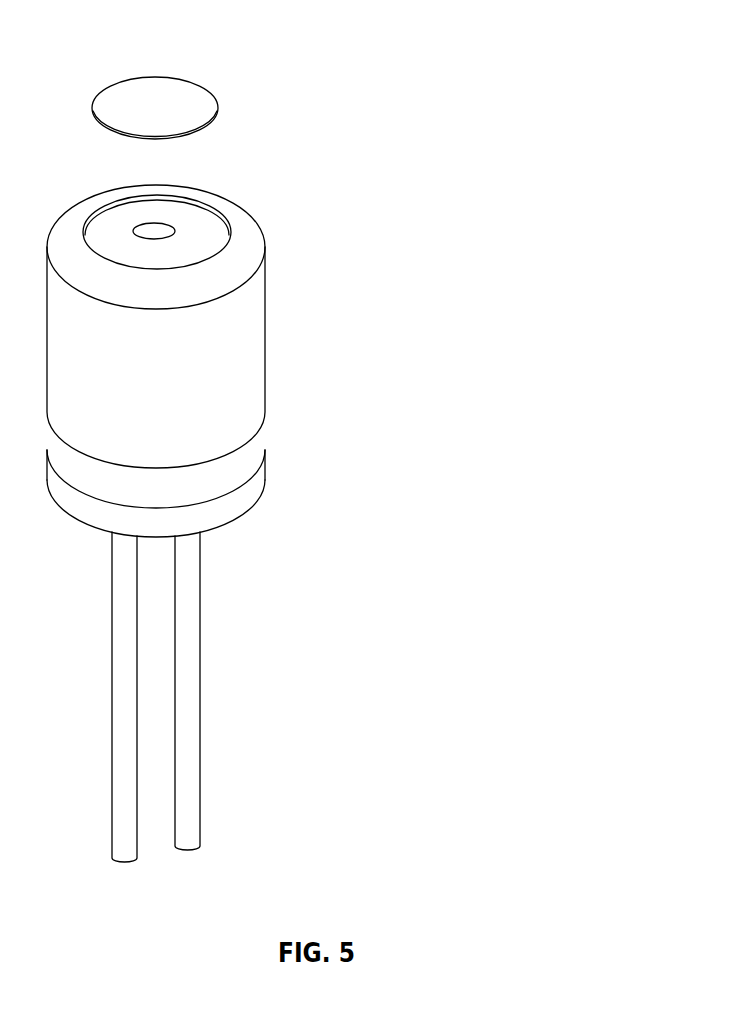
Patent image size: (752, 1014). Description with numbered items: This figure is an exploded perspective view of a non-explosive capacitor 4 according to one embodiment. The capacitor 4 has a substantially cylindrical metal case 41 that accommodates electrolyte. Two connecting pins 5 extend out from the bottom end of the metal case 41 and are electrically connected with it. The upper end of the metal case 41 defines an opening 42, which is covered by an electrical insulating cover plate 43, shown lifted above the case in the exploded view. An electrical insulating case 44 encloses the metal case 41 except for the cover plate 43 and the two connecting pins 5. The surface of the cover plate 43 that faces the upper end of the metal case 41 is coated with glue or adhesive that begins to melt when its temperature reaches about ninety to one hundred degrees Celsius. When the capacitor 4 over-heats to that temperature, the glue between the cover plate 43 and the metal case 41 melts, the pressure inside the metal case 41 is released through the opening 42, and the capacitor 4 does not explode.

The non-explosive capacitor 4 is at (328, 443).
The metal case 41 is at (210, 236).
The opening 42 is at (158, 231).
The cover plate 43 is at (185, 100).
The electrical insulating case 44 is at (242, 378).
The connecting pins 5 is at (200, 663).